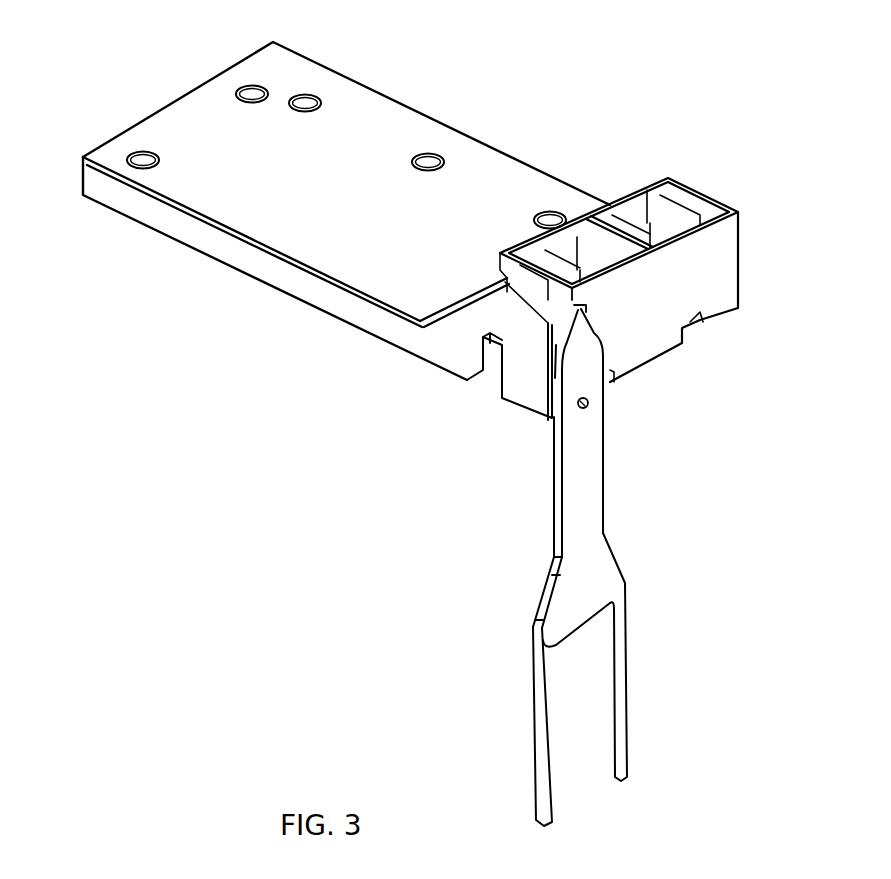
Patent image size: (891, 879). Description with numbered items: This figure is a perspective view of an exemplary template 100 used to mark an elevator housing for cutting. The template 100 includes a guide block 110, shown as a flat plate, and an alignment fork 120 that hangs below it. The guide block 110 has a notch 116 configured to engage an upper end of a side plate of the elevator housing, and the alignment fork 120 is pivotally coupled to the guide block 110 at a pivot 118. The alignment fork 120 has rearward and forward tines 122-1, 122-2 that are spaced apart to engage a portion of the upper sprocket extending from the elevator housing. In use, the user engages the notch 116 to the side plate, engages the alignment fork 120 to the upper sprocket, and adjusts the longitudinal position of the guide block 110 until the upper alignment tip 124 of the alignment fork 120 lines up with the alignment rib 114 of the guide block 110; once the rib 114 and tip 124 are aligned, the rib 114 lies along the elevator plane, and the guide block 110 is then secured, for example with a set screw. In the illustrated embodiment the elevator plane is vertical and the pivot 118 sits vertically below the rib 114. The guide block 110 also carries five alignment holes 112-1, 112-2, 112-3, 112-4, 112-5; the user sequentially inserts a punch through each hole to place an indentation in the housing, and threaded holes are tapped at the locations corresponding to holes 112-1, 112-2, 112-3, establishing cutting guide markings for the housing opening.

The template 100 is at (721, 75).
The guide block 110 is at (192, 122).
The alignment hole 112-1 is at (305, 103).
The alignment hole 112-2 is at (550, 220).
The alignment hole 112-3 is at (428, 162).
The alignment hole 112-4 is at (143, 160).
The alignment hole 112-5 is at (252, 94).
The alignment rib 114 is at (540, 305).
The notch 116 is at (500, 382).
The pivot 118 is at (586, 408).
The alignment fork 120 is at (617, 560).
The rearward tine 122-1 is at (537, 780).
The forward tine 122-2 is at (628, 746).
The upper alignment tip 124 is at (582, 311).